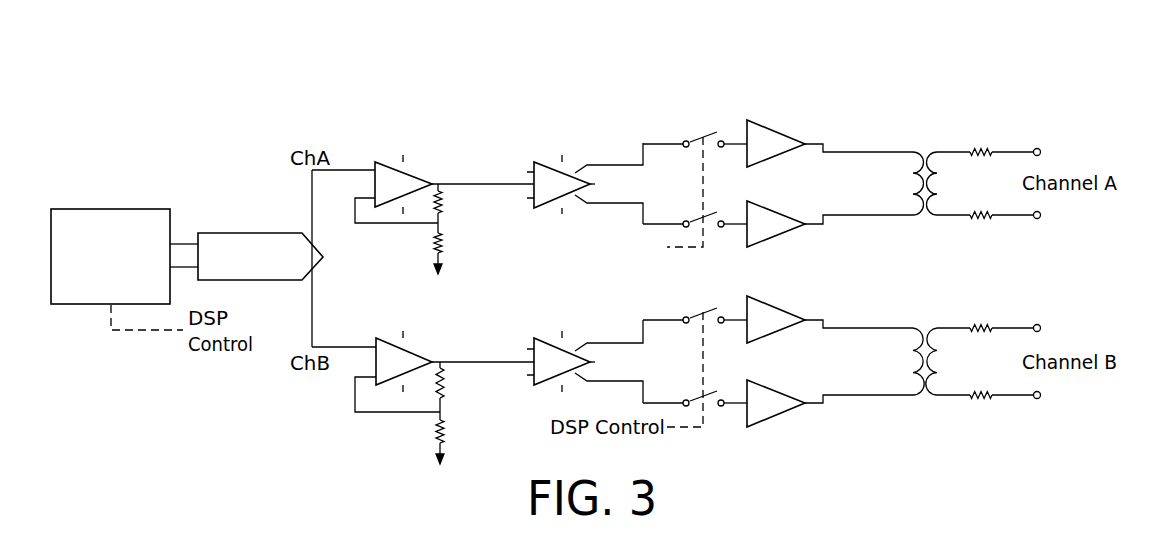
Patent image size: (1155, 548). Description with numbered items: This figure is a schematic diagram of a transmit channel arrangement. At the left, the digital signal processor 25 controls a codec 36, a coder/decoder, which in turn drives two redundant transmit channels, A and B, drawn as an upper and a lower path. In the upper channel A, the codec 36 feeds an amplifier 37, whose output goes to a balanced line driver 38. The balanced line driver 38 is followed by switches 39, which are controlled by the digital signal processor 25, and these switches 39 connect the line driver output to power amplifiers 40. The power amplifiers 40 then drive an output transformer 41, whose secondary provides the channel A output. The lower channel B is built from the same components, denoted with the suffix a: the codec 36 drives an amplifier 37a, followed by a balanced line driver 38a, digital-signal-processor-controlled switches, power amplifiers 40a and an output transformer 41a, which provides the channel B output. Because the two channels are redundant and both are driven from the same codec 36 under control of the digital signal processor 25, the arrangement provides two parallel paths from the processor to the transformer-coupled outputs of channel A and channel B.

The digital signal processor 25 is at (73, 305).
The codec 36 is at (221, 232).
The amplifier 37 is at (403, 102).
The amplifier 37a is at (403, 310).
The balanced line driver 38 is at (560, 100).
The balanced line driver 38a is at (560, 330).
The switches 39 is at (700, 130).
The power amplifiers 40 is at (775, 68).
The power amplifiers 40a is at (776, 427).
The output transformer 41 is at (925, 148).
The output transformer 41a is at (925, 398).